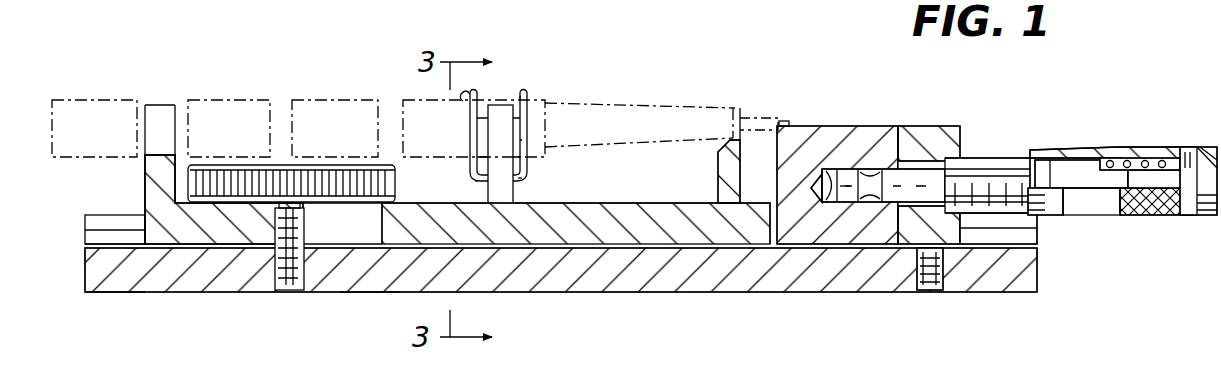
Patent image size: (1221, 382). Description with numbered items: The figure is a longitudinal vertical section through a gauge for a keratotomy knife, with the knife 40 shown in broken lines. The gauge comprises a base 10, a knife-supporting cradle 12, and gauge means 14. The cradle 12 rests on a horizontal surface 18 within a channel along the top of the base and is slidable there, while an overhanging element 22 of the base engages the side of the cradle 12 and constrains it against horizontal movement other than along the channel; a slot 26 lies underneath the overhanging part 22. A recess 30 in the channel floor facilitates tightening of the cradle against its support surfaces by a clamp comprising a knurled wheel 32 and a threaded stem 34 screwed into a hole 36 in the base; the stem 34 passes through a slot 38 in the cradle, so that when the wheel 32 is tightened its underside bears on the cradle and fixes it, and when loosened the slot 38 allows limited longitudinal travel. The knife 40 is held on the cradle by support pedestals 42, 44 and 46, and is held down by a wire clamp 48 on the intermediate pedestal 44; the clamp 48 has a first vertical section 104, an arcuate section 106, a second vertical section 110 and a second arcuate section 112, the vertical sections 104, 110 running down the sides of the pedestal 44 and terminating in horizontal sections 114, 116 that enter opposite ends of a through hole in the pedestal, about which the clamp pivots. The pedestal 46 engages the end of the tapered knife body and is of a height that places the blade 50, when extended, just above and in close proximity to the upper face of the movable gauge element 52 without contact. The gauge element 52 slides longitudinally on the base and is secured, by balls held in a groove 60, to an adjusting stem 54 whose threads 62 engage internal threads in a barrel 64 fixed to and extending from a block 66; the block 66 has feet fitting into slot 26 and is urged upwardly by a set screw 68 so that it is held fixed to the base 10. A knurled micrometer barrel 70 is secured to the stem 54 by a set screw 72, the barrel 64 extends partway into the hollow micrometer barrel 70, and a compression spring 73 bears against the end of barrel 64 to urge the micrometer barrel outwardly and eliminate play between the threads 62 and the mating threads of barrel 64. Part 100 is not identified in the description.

The base 10 is at (651, 293).
The knife-supporting cradle 12 is at (652, 188).
The gauge means 14 is at (904, 122).
The horizontal surface 18 is at (92, 242).
The overhanging element 22 is at (96, 222).
The slot 26 is at (127, 236).
The recess 30 is at (113, 250).
The knurled wheel 32 is at (328, 182).
The threaded stem 34 is at (300, 232).
The hole 36 is at (294, 290).
The slot 38 is at (360, 250).
The knife 40 is at (232, 106).
The support pedestal 42 is at (148, 160).
The support pedestal 44 is at (503, 199).
The support pedestal 46 is at (726, 186).
The wire clamp 48 is at (530, 116).
The blade 50 is at (787, 120).
The movable gauge element 52 is at (795, 235).
The adjusting stem 54 is at (905, 180).
The groove 60 is at (866, 175).
The threads 62 is at (1022, 186).
The barrel 64 is at (982, 160).
The block 66 is at (950, 128).
The set screw 68 is at (930, 280).
The knurled micrometer barrel 70 is at (1152, 218).
The set screw 72 is at (1190, 148).
The compression spring 73 is at (1126, 152).
The upper column portion 100 is at (160, 105).
The first vertical section 104 is at (472, 138).
The arcuate section 106 is at (466, 102).
The second vertical section 110 is at (525, 140).
The second arcuate section 112 is at (524, 92).
The horizontal section 114 is at (472, 178).
The horizontal section 116 is at (526, 180).